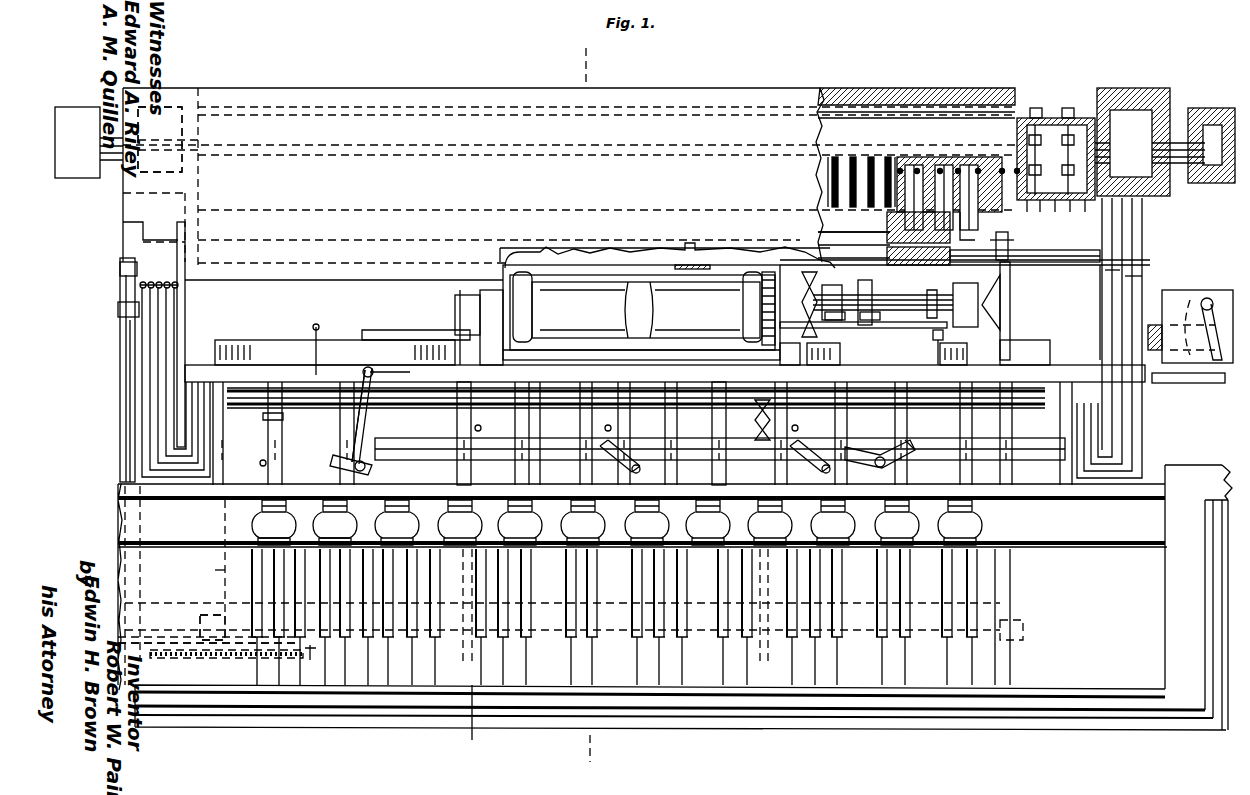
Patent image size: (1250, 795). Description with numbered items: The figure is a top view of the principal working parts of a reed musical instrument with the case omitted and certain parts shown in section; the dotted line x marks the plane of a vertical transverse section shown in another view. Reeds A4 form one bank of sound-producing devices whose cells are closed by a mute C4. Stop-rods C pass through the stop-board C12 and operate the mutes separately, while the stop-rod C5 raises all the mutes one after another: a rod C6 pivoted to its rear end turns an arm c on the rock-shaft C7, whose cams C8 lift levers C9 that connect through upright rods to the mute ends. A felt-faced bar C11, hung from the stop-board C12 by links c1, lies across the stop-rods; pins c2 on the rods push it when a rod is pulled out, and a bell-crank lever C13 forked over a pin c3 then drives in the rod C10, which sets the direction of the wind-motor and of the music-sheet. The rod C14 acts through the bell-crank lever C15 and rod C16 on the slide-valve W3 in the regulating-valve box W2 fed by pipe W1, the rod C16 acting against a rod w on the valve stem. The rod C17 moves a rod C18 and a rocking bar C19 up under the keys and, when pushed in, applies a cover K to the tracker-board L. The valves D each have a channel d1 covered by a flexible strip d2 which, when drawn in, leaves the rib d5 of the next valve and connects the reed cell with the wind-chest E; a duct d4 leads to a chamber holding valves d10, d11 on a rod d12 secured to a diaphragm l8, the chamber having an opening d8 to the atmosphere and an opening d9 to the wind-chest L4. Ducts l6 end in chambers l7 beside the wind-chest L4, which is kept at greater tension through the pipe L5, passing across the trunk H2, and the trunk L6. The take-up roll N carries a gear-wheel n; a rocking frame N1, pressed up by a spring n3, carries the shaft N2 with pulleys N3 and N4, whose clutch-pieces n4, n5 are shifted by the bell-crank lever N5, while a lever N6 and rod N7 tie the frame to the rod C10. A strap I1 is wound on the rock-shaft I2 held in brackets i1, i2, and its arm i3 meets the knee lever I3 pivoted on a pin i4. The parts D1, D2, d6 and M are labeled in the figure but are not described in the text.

The trunk H2 is at (165, 108).
The trunk L6 is at (88, 168).
The pipe or duct L5 is at (112, 165).
The wind-chest L4 is at (1040, 126).
The vertical ducts l6 is at (1042, 112).
The chambers l7 is at (1074, 118).
The flexible diaphragm l8 is at (1040, 135).
The bracket i1 is at (120, 266).
The strap I1 is at (118, 306).
The rock-shaft I2 is at (120, 348).
The knee swell or lever I3 is at (466, 723).
The bracket i2 is at (209, 661).
The arm i3 is at (233, 640).
The pin i4 is at (467, 522).
The wind-chest E is at (860, 118).
The valves D is at (990, 155).
The dog D1 is at (970, 165).
The dog D2 is at (914, 165).
The channel d1 is at (940, 168).
The strip of flexible material d2 is at (914, 168).
The duct d4 is at (978, 168).
The bridge or rib d5 is at (905, 172).
The lever d6 is at (968, 218).
The opening d8 is at (1085, 208).
The opening d9 is at (1080, 209).
The valve d10 is at (1062, 212).
The valve d11 is at (1040, 212).
The rod d12 is at (1016, 212).
The sound-producing devices A4 is at (887, 222).
The arm c is at (1008, 240).
The mute C4 is at (830, 262).
The levers C9 is at (1128, 274).
The rock-shaft C7 is at (1105, 270).
The cams C8 is at (1125, 276).
The pipe W1 is at (1155, 325).
The regulating-valve box W2 is at (1218, 290).
The slide-valve W3 is at (1195, 329).
The rod w is at (1200, 338).
The rod C16 is at (1170, 383).
The gear-wheel n is at (770, 305).
The take-up roll N is at (637, 307).
The rocking frame N1 is at (912, 295).
The shaft N2 is at (955, 290).
The pulley N3 is at (998, 300).
The pulley N4 is at (812, 282).
The bell-crank lever N5 is at (842, 294).
The clutch-piece n5 is at (868, 289).
The clutch-piece n4 is at (835, 329).
The spring n3 is at (870, 328).
The lever N6 is at (888, 328).
The rod N7 is at (934, 340).
The rod C6 is at (1010, 306).
The cover K is at (645, 350).
The tracker-board L is at (625, 365).
The lever M is at (613, 426).
The bell-crank lever C15 is at (360, 410).
The pins c2 is at (792, 428).
The links c1 is at (715, 460).
The pin c3 is at (912, 449).
The bar C11 is at (550, 445).
The stop-board C12 is at (548, 460).
The bell-crank lever C13 is at (868, 448).
The stop-rods C is at (676, 522).
The stop-rod C5 is at (982, 530).
The rod C10 is at (897, 522).
The rod C14 is at (335, 522).
The rod C17 is at (274, 522).
The rod C18 is at (215, 572).
The rocking bar C19 is at (225, 604).
The dotted line x is at (578, 409).